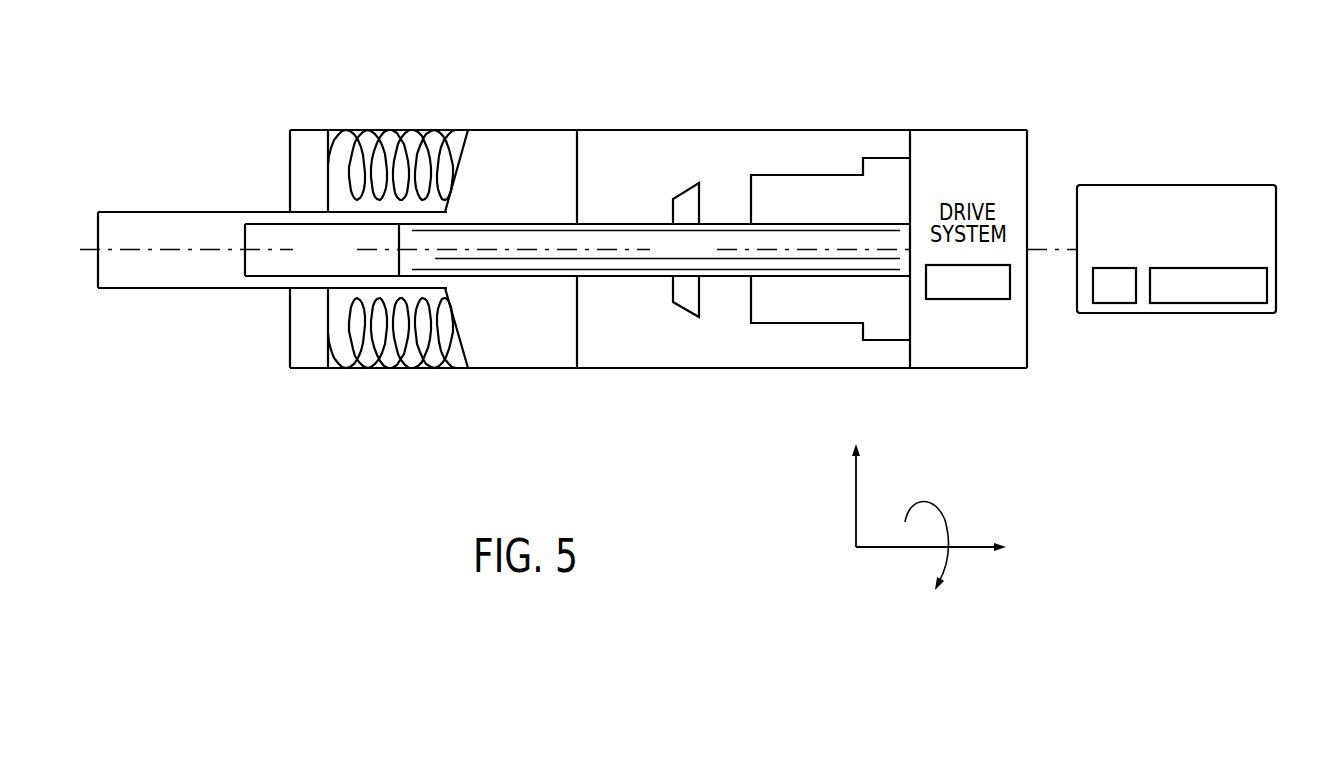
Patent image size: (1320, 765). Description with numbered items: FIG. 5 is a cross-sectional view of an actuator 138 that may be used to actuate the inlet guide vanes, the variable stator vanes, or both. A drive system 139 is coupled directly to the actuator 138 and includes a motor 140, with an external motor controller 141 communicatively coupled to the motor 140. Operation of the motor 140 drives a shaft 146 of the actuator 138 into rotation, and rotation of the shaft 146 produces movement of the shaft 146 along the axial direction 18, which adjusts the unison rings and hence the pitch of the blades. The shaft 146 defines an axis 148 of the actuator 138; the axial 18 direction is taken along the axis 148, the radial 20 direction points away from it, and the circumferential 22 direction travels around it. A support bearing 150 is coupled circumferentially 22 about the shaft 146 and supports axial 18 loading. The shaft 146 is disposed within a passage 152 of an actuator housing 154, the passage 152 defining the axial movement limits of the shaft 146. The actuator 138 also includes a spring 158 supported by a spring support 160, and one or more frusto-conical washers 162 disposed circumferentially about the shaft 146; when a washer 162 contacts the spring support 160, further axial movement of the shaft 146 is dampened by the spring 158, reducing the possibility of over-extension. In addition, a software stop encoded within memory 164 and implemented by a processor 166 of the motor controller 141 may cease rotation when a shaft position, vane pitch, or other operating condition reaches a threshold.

The axial direction 18 is at (977, 543).
The radial direction 20 is at (855, 498).
The circumferential direction 22 is at (940, 506).
The actuator 138 is at (670, 460).
The drive system 139 is at (1063, 404).
The motor 140 is at (968, 300).
The motor controller 141 is at (1176, 185).
The shaft 146 is at (705, 262).
The axis 148 is at (93, 250).
The support bearing 150 is at (853, 212).
The passage 152 is at (340, 263).
The actuator housing 154 is at (243, 238).
The spring 158 is at (385, 160).
The spring support 160 is at (547, 191).
The washer 162 is at (684, 192).
The memory 164 is at (1207, 303).
The processor 166 is at (1113, 303).